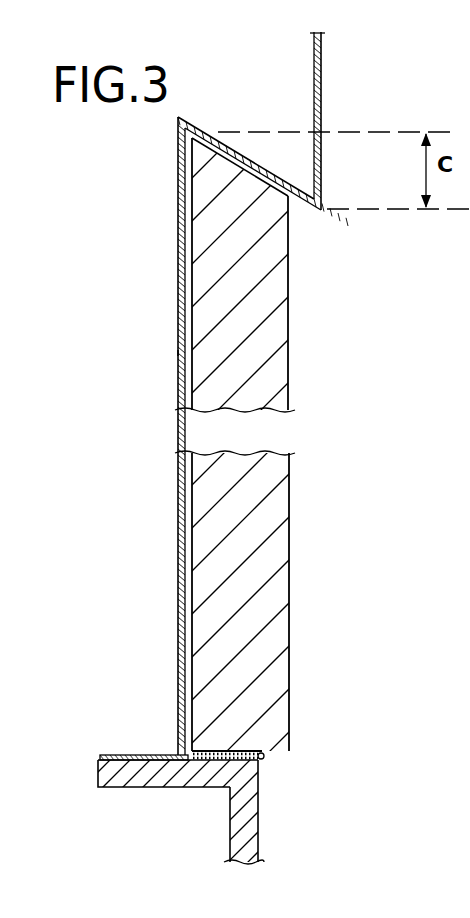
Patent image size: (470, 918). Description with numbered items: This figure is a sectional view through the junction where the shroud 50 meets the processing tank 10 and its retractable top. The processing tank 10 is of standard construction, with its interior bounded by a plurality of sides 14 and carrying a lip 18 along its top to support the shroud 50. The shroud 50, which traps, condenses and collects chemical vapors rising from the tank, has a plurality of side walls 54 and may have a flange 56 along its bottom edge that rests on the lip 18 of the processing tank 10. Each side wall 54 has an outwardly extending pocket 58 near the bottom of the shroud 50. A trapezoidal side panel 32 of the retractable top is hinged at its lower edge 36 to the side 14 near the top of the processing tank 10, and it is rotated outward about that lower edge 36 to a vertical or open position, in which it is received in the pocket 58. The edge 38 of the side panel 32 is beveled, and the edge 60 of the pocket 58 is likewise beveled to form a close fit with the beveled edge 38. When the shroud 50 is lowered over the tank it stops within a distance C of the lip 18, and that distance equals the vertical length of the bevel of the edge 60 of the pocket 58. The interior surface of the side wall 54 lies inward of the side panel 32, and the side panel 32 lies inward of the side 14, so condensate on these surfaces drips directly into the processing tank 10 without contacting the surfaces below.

The processing tank 10 is at (183, 810).
The side 14 is at (258, 836).
The lip 18 is at (146, 787).
The side panel 32 is at (290, 362).
The lower edge 36 is at (278, 756).
The edge 38 is at (258, 178).
The shroud 50 is at (172, 191).
The side wall 54 is at (323, 86).
The flange 56 is at (130, 755).
The pocket 58 is at (170, 354).
The edge 60 is at (240, 150).